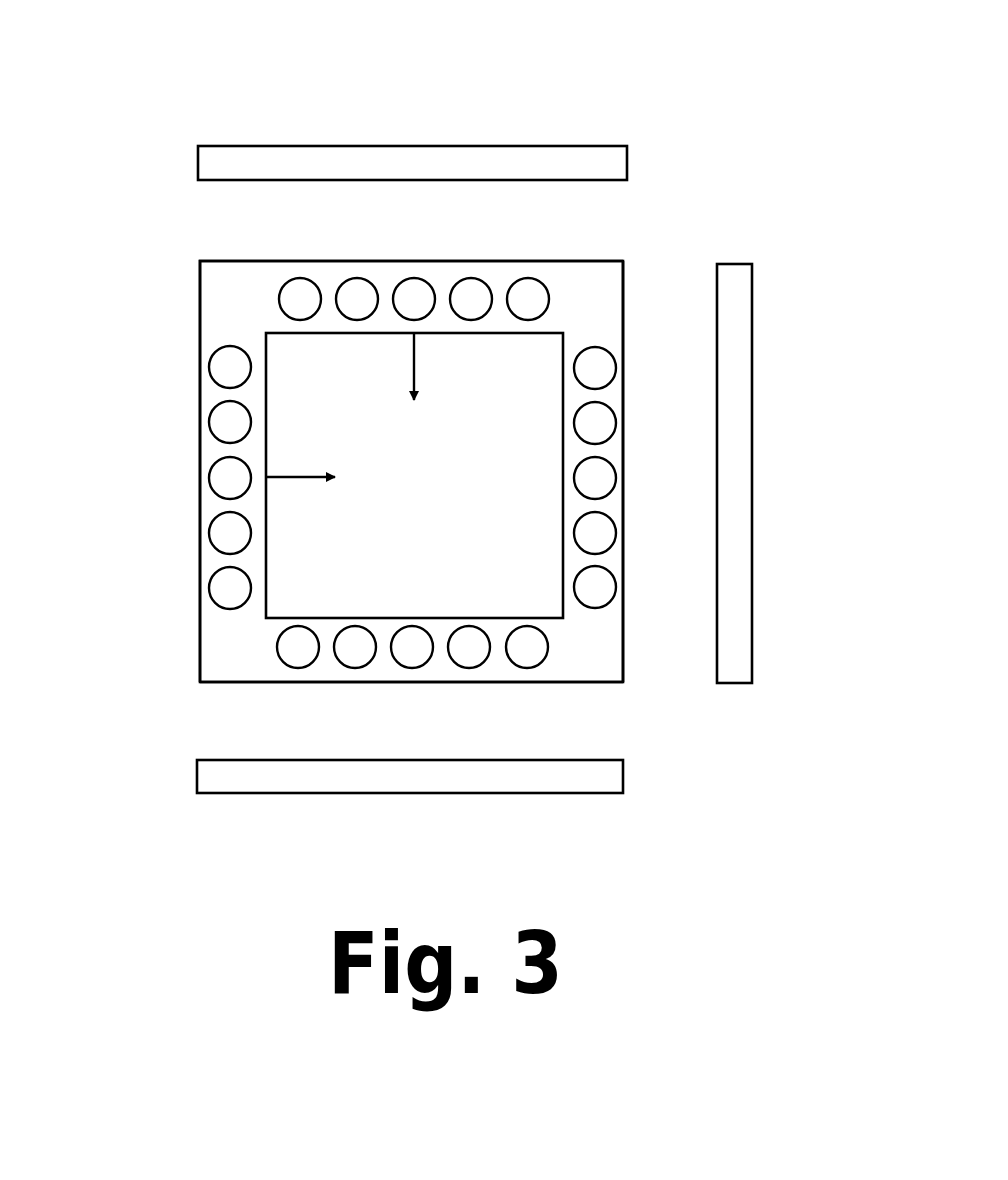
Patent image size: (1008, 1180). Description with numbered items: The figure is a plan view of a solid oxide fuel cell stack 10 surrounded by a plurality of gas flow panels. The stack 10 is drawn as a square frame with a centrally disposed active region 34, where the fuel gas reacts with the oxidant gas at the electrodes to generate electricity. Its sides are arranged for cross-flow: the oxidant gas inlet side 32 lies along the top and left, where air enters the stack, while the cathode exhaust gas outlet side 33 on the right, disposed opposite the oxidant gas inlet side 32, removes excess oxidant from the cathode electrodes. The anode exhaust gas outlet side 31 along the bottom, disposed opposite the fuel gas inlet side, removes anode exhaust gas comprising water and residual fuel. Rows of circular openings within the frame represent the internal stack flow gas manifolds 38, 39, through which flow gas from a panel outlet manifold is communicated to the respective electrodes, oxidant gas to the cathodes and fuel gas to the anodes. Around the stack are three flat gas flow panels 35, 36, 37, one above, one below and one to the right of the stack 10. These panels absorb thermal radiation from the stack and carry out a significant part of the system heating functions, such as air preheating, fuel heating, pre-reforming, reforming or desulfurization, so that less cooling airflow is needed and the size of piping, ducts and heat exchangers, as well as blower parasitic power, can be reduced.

The solid oxide fuel cell stack 10 is at (200, 447).
The anode exhaust gas outlet side 31 is at (590, 682).
The oxidant gas inlet side 32 is at (200, 305).
The cathode exhaust gas outlet side 33 is at (623, 475).
The active region 34 is at (441, 482).
The gas flow panel 35 is at (583, 793).
The gas flow panel 36 is at (582, 146).
The gas flow panel 37 is at (752, 433).
The internal stack flow gas manifold 38 is at (232, 477).
The internal stack flow gas manifold 39 is at (361, 300).